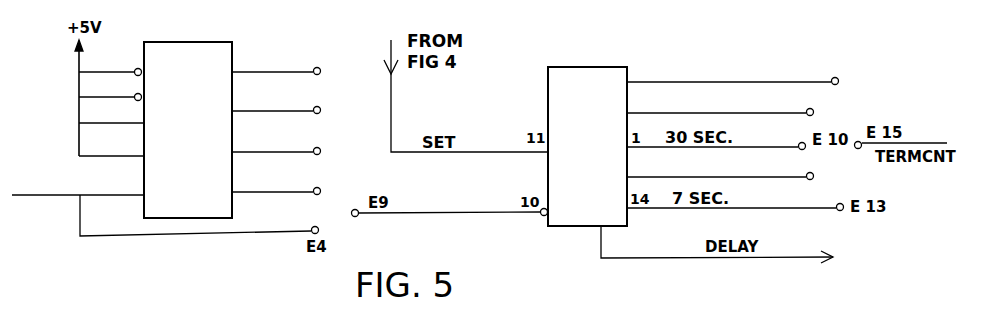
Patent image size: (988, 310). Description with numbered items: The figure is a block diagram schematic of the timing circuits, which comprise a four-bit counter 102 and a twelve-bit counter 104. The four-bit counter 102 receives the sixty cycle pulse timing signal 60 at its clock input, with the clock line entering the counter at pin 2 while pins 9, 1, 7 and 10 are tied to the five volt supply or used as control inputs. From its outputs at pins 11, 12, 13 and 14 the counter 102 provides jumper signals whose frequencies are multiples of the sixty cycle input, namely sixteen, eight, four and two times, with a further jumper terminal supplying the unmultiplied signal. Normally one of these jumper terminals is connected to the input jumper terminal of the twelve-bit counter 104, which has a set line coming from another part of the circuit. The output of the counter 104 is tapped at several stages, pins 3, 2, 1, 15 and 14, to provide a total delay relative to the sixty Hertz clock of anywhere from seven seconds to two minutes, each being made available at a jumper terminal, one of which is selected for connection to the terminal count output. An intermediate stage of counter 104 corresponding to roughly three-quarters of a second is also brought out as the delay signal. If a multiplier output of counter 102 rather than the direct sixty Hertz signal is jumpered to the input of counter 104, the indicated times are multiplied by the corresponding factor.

The 4-bit counter 102 is at (233, 208).
The 12-bit counter 104 is at (548, 102).
The 60 cycle pulse timing signal 60 is at (78, 185).
The counter pin 9 is at (110, 63).
The counter pin 1 is at (110, 89).
The counter pin 7 is at (111, 113).
The counter pin 10 is at (111, 146).
The counter pin 11 output 11 is at (289, 64).
The counter pin 12 output 12 is at (291, 102).
The counter pin 13 output 13 is at (290, 143).
The counter pin 14 output 14 is at (290, 183).
The 4020 pin 3 output 3 is at (754, 74).
The 4020 pin 2 output 2 is at (741, 104).
The 4020 pin 15 output 15 is at (744, 169).